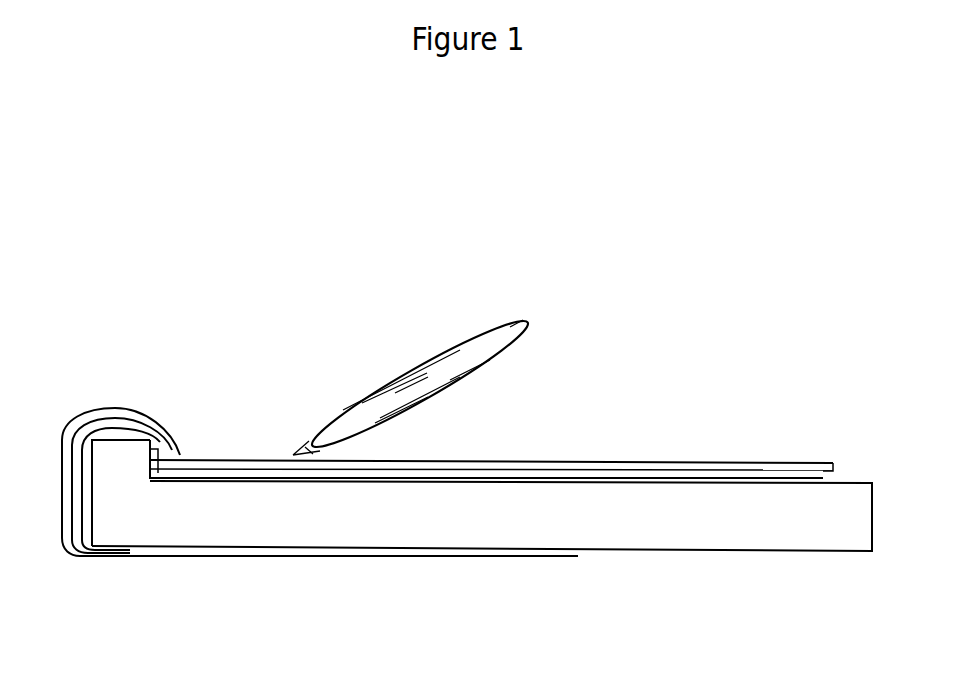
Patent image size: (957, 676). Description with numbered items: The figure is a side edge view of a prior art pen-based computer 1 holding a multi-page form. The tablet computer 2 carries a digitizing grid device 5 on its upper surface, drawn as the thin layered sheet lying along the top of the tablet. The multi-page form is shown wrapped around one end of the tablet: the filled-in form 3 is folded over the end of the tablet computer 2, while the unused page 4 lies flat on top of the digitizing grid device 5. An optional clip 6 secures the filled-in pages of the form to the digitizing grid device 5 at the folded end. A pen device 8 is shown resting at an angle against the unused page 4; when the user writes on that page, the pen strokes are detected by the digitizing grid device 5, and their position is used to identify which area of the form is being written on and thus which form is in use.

The pen-based computer 1 is at (196, 290).
The tablet computer 2 is at (675, 530).
The form 3 is at (285, 558).
The unused page 4 is at (677, 462).
The digitizing grid device 5 is at (823, 475).
The clip 6 is at (158, 448).
The pen device 8 is at (482, 338).